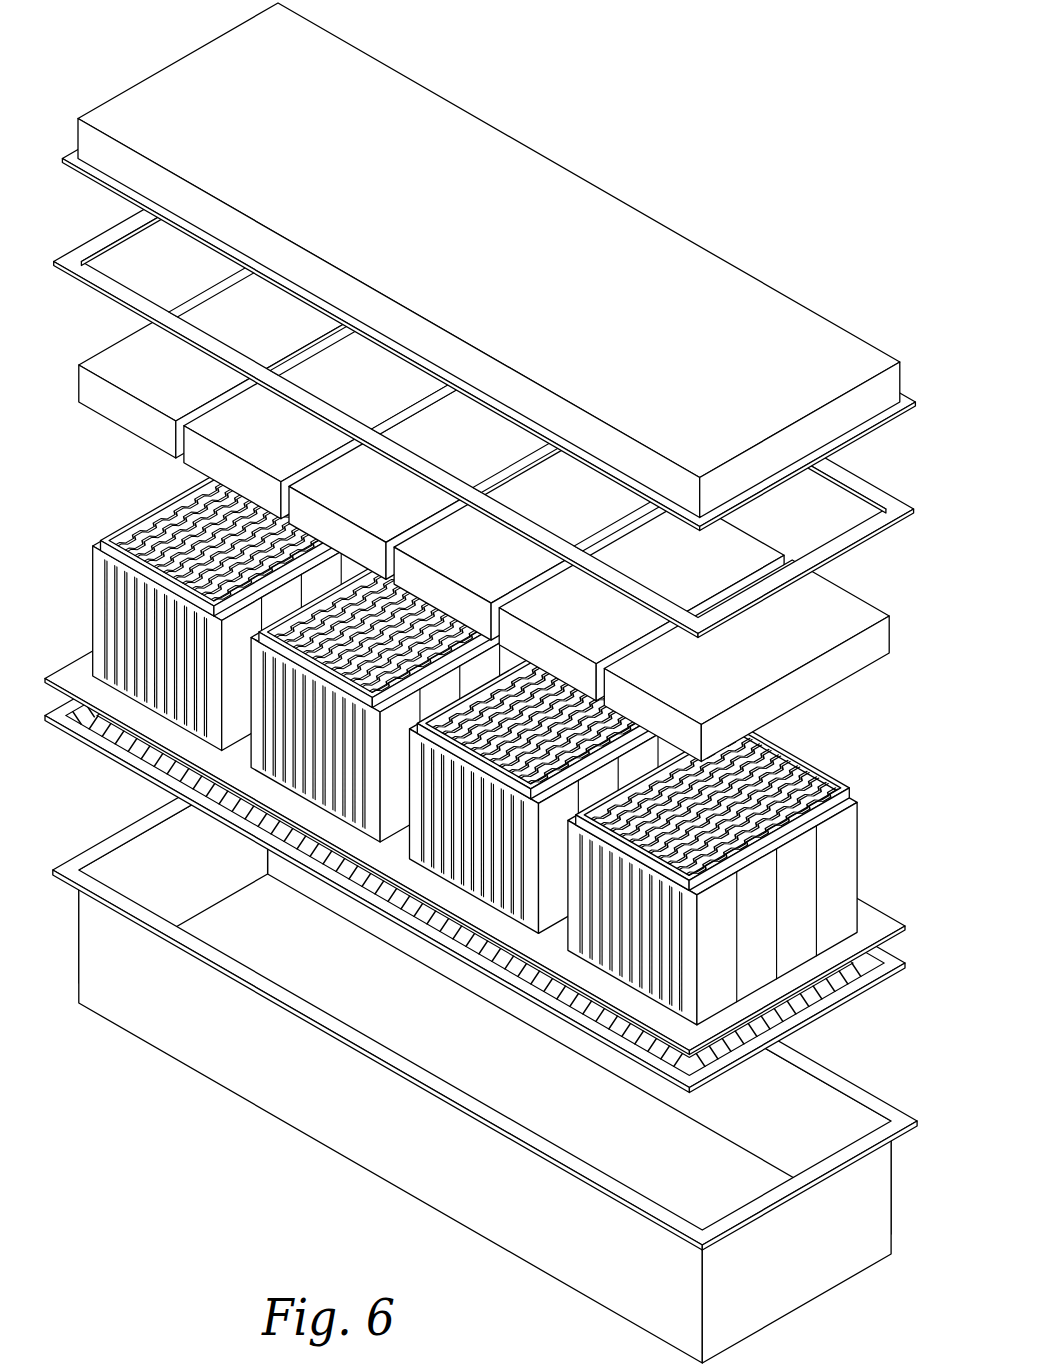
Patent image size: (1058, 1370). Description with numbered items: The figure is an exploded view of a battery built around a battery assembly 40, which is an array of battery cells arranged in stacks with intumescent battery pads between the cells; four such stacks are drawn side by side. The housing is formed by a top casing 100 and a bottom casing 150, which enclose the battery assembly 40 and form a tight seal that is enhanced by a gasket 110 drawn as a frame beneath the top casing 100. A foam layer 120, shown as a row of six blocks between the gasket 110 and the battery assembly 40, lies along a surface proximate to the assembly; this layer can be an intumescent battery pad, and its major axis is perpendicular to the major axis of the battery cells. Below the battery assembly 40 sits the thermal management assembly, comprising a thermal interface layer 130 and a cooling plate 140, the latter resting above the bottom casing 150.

The top casing 100 is at (708, 295).
The gasket 110 is at (865, 487).
The foam layer 120 is at (852, 613).
The battery assembly 40 is at (838, 877).
The thermal interface layer 130 is at (882, 928).
The cooling plate 140 is at (832, 998).
The bottom casing 150 is at (795, 1268).